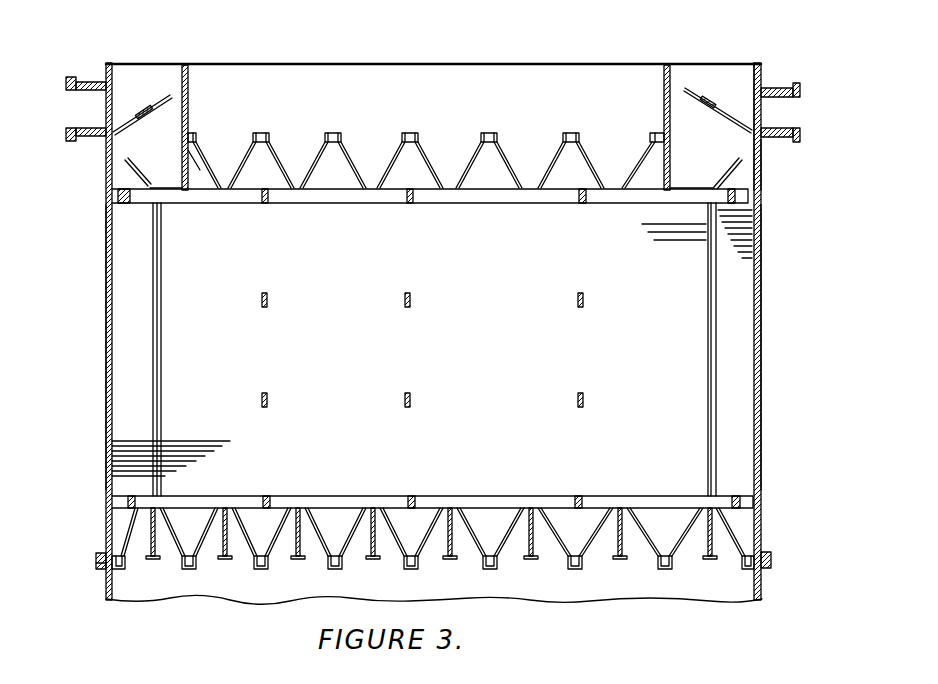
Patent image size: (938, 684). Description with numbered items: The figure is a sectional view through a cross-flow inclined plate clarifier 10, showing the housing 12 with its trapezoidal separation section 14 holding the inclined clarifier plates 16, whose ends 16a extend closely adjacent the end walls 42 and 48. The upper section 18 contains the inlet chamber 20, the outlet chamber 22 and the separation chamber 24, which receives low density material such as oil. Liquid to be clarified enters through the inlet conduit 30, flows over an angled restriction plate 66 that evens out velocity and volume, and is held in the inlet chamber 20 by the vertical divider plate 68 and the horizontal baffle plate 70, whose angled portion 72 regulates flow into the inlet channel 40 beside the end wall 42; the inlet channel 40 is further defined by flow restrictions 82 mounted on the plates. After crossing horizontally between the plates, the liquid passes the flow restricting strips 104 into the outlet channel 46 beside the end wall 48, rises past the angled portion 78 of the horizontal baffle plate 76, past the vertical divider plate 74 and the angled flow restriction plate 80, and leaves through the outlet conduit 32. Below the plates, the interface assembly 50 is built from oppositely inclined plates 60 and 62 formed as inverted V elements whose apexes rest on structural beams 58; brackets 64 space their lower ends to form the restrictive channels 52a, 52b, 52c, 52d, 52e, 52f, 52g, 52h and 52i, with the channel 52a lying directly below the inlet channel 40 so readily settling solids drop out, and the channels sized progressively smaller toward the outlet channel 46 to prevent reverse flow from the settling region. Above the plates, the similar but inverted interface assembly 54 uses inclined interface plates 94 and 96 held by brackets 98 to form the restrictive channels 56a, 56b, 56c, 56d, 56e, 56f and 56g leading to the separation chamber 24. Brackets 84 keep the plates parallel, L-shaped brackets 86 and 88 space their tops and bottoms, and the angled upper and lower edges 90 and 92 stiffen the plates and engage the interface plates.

The cross-flow inclined plate clarifier 10 is at (775, 45).
The housing 12 is at (762, 78).
The trapezoidal separation section 14 is at (764, 385).
The inclined clarifier plates 16 is at (500, 362).
The ends of the inclined clarifier plates 16a is at (140, 337).
The upper section 18 is at (764, 166).
The inlet chamber 20 is at (712, 78).
The outlet chamber 22 is at (151, 78).
The separation chamber 24 is at (514, 90).
The inlet conduit 30 is at (797, 89).
The outlet conduit 32 is at (88, 82).
The inlet channel 40 is at (735, 292).
The end wall 42 is at (763, 302).
The outlet channel 46 is at (128, 285).
The end wall 48 is at (106, 300).
The interface assembly 50 is at (132, 528).
The restrictive channel 52a is at (750, 546).
The restrictive channel 52b is at (665, 546).
The restrictive channel 52c is at (575, 546).
The restrictive channel 52d is at (490, 546).
The restrictive channel 52e is at (411, 546).
The restrictive channel 52f is at (335, 546).
The restrictive channel 52g is at (261, 547).
The restrictive channel 52h is at (189, 546).
The restrictive channel 52i is at (128, 522).
The interface assembly 54 is at (210, 165).
The restrictive channel 56a is at (660, 148).
The restrictive channel 56b is at (571, 150).
The restrictive channel 56c is at (489, 150).
The restrictive channel 56d is at (410, 150).
The restrictive channel 56e is at (333, 150).
The restrictive channel 56f is at (261, 150).
The restrictive channel 56g is at (206, 162).
The structural beams 58 is at (229, 558).
The inclined plate 60 is at (153, 508).
The inclined plate 62 is at (232, 508).
The brackets 64 is at (108, 568).
The angled restriction plate 66 is at (688, 90).
The vertical divider plate 68 is at (662, 100).
The baffle plate 70 is at (715, 186).
The angled portion 72 is at (735, 168).
The vertical divider plate 74 is at (189, 108).
The horizontal baffle plate 76 is at (170, 186).
The angled portion 78 is at (125, 170).
The angled flow restriction plate 80 is at (157, 96).
The flow restrictions 82 is at (706, 289).
The brackets 84 is at (262, 300).
The L-shaped brackets 86 is at (118, 196).
The L-shaped brackets 88 is at (130, 496).
The upper edge 90 is at (383, 204).
The lower edge 92 is at (364, 502).
The inclined interface plate 94 is at (290, 158).
The inclined interface plate 96 is at (288, 178).
The brackets 98 is at (196, 134).
The flow restricting strips 104 is at (163, 264).